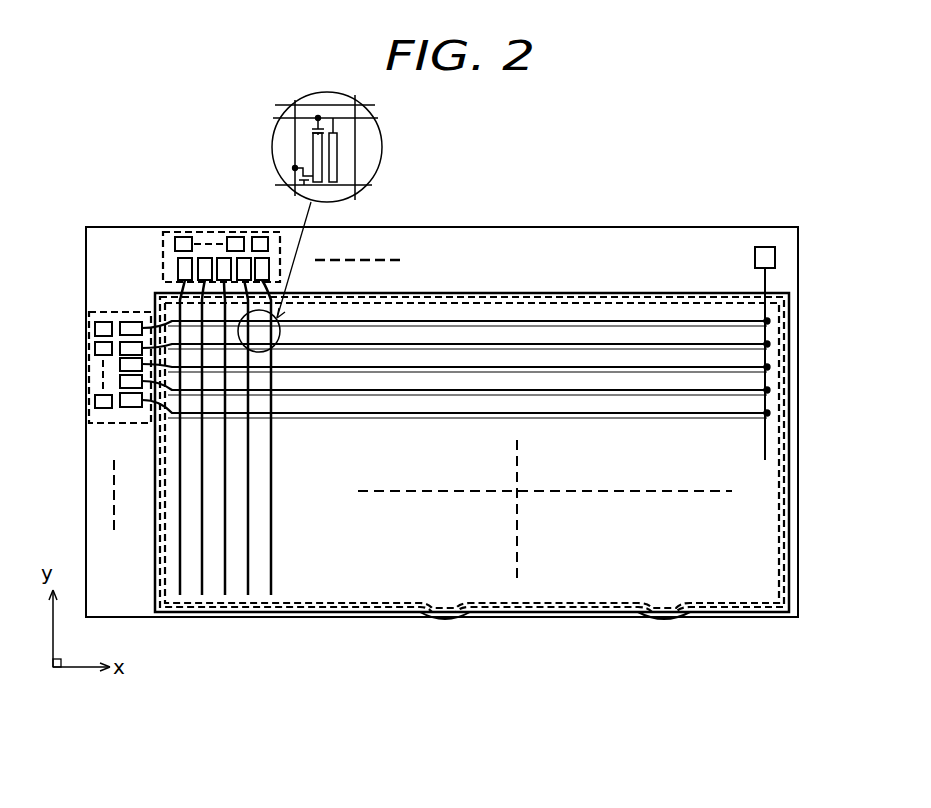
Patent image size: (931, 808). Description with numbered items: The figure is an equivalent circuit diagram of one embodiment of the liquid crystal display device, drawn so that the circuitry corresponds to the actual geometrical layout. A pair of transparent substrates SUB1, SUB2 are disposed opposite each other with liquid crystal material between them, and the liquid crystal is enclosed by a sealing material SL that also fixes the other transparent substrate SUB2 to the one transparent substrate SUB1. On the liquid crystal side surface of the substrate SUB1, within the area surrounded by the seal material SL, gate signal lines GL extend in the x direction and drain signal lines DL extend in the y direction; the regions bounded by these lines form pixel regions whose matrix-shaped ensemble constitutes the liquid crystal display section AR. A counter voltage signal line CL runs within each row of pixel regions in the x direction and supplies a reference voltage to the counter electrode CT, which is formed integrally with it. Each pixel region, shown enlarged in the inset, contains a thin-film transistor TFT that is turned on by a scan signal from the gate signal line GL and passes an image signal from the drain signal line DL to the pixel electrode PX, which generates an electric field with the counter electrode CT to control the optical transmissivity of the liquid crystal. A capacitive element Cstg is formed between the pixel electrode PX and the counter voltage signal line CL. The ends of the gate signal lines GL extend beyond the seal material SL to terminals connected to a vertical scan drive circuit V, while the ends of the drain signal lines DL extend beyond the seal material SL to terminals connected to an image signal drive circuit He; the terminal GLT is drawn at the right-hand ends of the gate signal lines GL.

The transparent substrate SUB1 is at (476, 227).
The transparent substrate SUB2 is at (570, 293).
The sealing material SL is at (363, 612).
The image signal drive circuit He is at (163, 252).
The vertical scan drive circuit V is at (105, 423).
The gate signal line GL is at (707, 413).
The counter voltage signal line CL is at (637, 349).
The gate line terminal GLT is at (766, 247).
The drain signal line DL is at (248, 576).
The pixel electrode PX is at (313, 147).
The counter electrode CT is at (337, 153).
The capacitive element Cstg is at (308, 128).
The thin-film transistor TFT is at (285, 176).
The liquid crystal display section AR is at (545, 510).